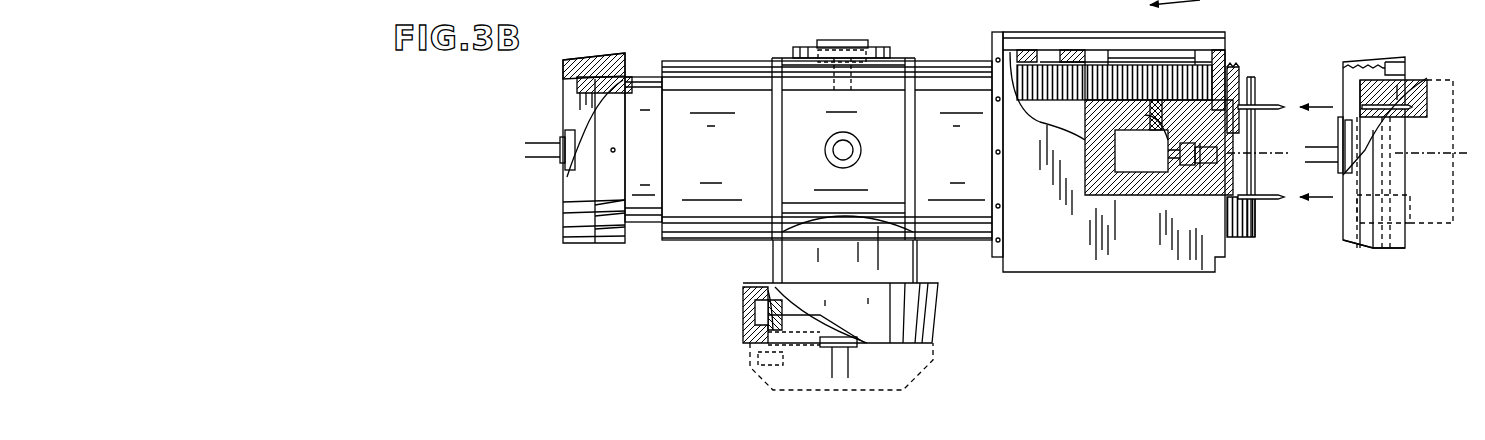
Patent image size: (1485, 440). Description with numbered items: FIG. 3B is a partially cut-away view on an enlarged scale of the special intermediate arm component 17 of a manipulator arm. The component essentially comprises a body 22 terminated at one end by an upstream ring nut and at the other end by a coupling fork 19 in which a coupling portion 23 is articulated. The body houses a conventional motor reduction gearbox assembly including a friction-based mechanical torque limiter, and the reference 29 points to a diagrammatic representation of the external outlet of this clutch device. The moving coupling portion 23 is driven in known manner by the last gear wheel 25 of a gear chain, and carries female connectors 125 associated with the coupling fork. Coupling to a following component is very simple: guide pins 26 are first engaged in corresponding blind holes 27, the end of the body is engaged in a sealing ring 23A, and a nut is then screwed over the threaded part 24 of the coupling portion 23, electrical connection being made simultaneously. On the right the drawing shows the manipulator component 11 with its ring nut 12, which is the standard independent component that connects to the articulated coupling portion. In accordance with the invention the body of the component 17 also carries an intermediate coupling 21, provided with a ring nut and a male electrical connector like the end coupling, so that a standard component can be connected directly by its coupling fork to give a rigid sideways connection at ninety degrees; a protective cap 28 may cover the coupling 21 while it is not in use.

The manipulator component 11 is at (1418, 225).
The ring nut 12 is at (1370, 60).
The intermediate basic component 17 is at (708, 250).
The coupling fork 19 is at (1115, 250).
The intermediate unit 21 is at (945, 307).
The body 22 is at (705, 77).
The coupling portion 23 is at (1240, 125).
The sealing ring 23A is at (1255, 95).
The threaded part 24 is at (1233, 70).
The last gear wheel 25 is at (1125, 77).
The guide pins 26 is at (1270, 107).
The blind holes 27 is at (1395, 100).
The protective cap 28 is at (758, 372).
The external outlet of the clutch device 29 is at (840, 42).
The female connectors 125 is at (1215, 160).